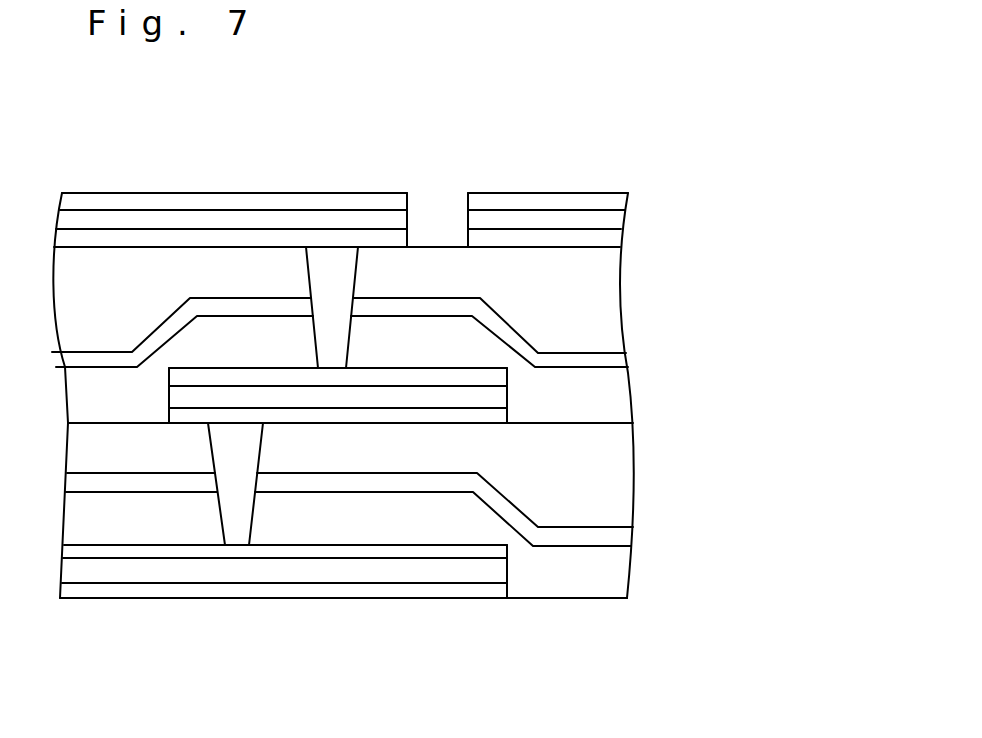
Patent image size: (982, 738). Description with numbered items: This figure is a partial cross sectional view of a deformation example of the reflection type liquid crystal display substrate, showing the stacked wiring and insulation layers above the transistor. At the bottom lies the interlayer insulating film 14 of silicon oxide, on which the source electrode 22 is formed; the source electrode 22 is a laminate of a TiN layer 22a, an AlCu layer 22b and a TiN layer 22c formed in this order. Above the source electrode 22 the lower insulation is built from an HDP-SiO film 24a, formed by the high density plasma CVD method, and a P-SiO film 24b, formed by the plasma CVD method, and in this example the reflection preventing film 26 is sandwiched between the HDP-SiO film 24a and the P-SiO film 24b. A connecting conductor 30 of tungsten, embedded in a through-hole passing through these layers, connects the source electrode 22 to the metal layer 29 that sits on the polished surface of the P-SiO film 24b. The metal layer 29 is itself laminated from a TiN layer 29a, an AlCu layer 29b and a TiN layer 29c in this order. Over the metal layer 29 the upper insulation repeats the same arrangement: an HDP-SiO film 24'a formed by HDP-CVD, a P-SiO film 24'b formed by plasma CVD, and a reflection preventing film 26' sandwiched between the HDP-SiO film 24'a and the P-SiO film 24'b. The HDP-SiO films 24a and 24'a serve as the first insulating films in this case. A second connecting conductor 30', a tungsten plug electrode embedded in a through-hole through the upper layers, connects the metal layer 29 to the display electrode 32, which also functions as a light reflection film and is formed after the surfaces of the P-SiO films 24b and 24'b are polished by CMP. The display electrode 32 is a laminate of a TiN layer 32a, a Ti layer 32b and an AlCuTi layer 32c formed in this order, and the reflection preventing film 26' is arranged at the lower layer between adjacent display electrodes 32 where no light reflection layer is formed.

The interlayer insulating film 14 is at (540, 643).
The source electrode 22 is at (323, 647).
The TiN layer 22a is at (422, 590).
The AlCu layer 22b is at (372, 572).
The TiN layer 22c is at (332, 553).
The HDP-SiO film 24a is at (627, 583).
The P-SiO film 24b is at (633, 462).
The HDP-SiO film 24'a is at (416, 407).
The P-SiO film 24'b is at (408, 325).
The reflection preventing film 26 is at (401, 519).
The reflection preventing film 26' is at (400, 342).
The metal layer 29 is at (368, 335).
The TiN layer 29a is at (472, 412).
The AlCu layer 29b is at (407, 393).
The TiN layer 29c is at (372, 378).
The connecting conductor 30 is at (294, 484).
The connecting conductor 30' is at (282, 307).
The display electrode 32 is at (751, 151).
The TiN layer 32a is at (620, 240).
The Ti layer 32b is at (622, 226).
The AlCuTi layer 32c is at (623, 202).